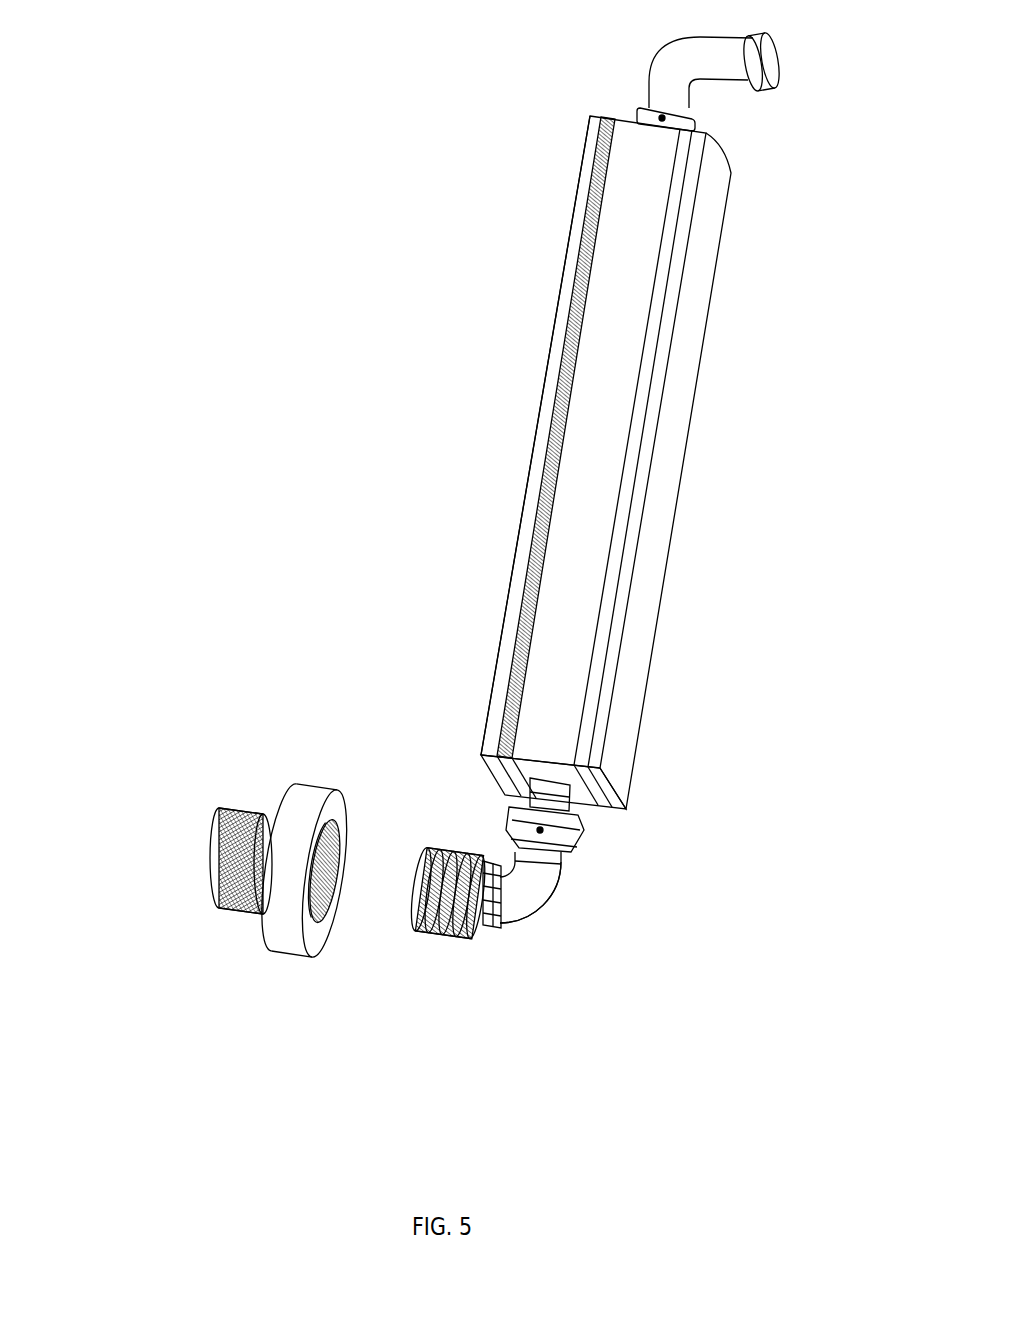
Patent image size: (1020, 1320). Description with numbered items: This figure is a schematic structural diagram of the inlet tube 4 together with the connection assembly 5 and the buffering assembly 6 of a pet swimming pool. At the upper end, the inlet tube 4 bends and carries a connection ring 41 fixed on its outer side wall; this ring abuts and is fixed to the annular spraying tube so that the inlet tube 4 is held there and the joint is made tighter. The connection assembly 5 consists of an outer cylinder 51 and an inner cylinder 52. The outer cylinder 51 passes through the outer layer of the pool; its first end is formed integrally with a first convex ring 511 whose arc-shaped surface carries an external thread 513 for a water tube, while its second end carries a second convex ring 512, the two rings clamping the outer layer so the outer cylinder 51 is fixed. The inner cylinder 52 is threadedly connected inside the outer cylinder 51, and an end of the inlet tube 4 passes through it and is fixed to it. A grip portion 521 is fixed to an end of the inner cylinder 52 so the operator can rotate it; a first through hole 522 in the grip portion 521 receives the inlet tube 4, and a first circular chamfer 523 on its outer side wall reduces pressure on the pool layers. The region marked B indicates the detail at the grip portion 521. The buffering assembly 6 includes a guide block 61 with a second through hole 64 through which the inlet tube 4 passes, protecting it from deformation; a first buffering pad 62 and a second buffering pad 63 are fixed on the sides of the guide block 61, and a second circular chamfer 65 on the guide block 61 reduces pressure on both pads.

The inlet tube 4 is at (678, 74).
The connection ring 41 is at (760, 80).
The connection assembly 5 is at (192, 1081).
The outer cylinder 51 is at (213, 897).
The first convex ring 511 is at (215, 853).
The second convex ring 512 is at (283, 937).
The external thread 513 is at (225, 815).
The inner cylinder 52 is at (424, 932).
The grip portion 521 is at (458, 932).
The first through hole 522 is at (496, 873).
The first circular chamfer 523 is at (528, 920).
The buffering assembly 6 is at (298, 305).
The guide block 61 is at (547, 447).
The first buffering pad 62 is at (562, 273).
The second buffering pad 63 is at (635, 640).
The second through hole 64 is at (548, 778).
The second circular chamfer 65 is at (678, 203).
The detail B nut B is at (577, 847).